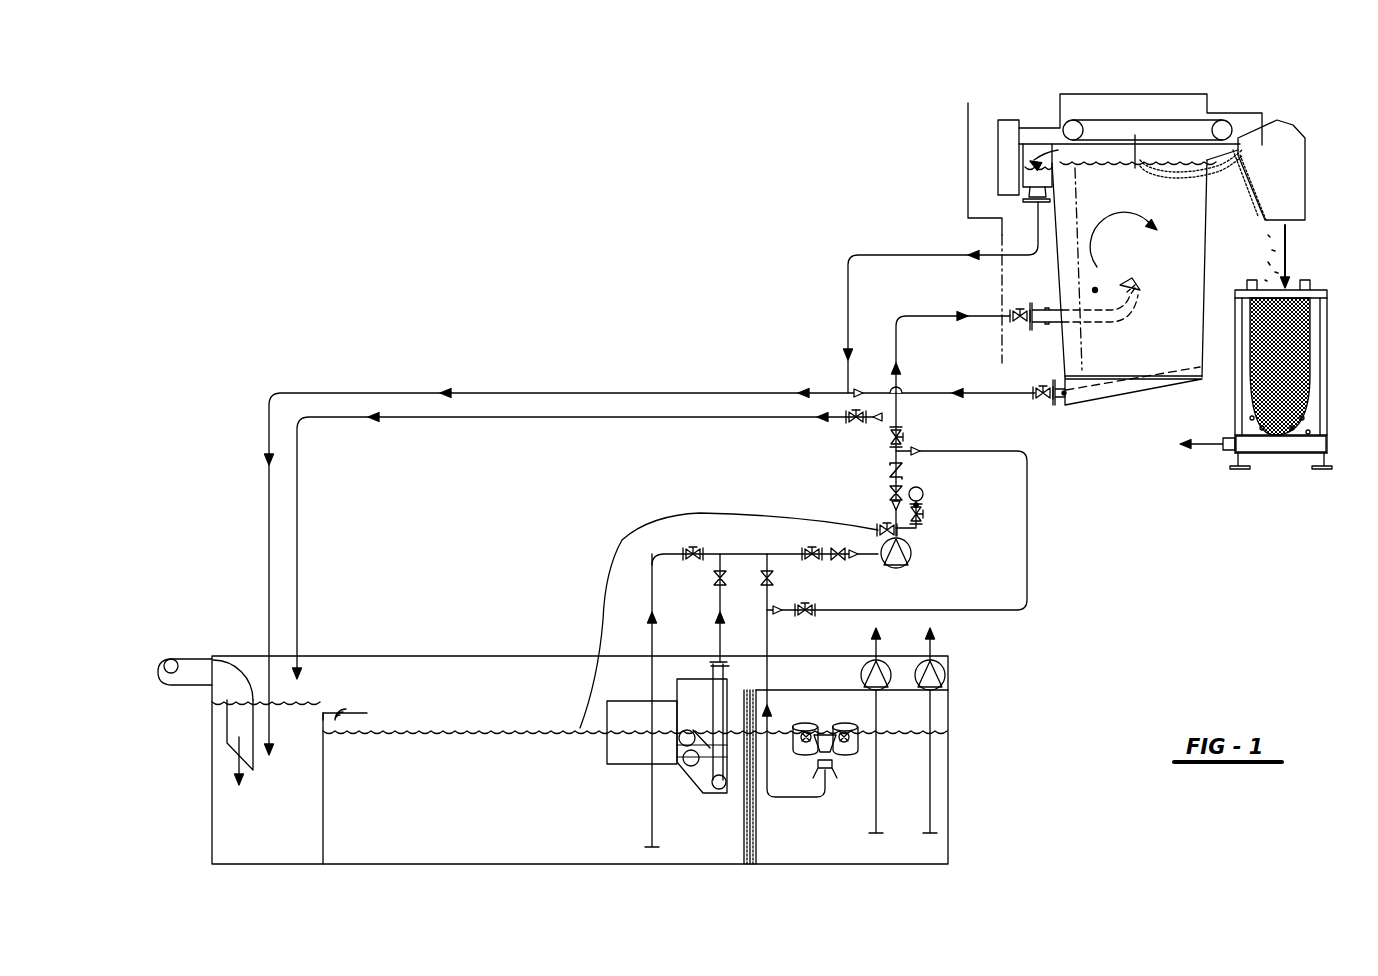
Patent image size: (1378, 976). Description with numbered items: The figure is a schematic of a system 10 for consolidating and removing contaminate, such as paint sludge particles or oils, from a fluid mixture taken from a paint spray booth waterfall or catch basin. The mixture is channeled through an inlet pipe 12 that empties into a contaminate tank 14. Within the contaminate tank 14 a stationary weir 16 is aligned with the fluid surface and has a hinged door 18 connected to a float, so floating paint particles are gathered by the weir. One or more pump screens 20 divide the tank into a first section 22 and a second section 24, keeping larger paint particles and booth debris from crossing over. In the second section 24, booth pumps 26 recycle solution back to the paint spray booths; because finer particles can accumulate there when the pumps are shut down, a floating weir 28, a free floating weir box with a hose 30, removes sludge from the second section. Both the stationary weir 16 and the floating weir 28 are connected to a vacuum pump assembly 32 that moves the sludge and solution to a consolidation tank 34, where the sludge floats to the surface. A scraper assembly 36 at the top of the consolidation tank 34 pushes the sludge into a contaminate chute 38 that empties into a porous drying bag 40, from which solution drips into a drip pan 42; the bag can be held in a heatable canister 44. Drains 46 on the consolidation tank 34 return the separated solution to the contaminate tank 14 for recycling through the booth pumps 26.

The system 10 is at (548, 328).
The inlet pipe 12 is at (190, 664).
The contaminate tank 14 is at (212, 773).
The stationary weir 16 is at (700, 790).
The hinged door 18 is at (700, 735).
The pump screens 20 is at (750, 872).
The first section 22 is at (484, 806).
The second section 24 is at (846, 841).
The booth pumps 26 is at (862, 670).
The floating weir 28 is at (850, 728).
The hose 30 is at (775, 798).
The vacuum pump assembly 32 is at (918, 577).
The consolidation tank 34 is at (1184, 284).
The scraper assembly 36 is at (1160, 105).
The contaminate chute 38 is at (1275, 178).
The drying bag 40 is at (1305, 337).
The drip pan 42 is at (1300, 437).
The canister 44 is at (1327, 400).
The drains 46 is at (1018, 230).